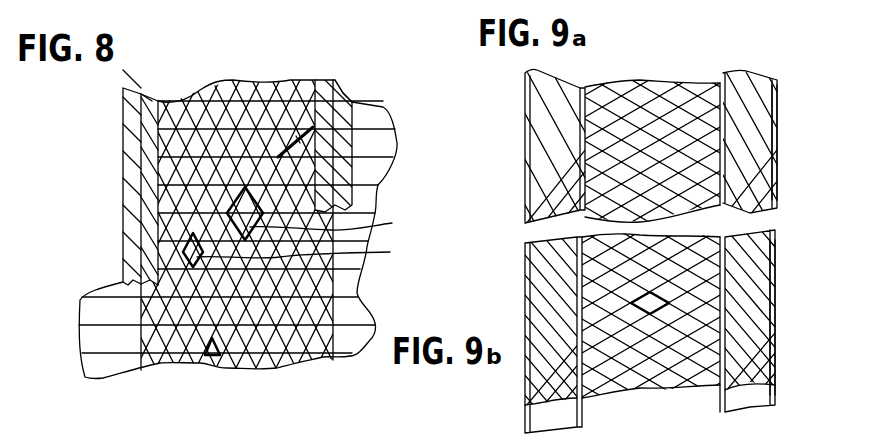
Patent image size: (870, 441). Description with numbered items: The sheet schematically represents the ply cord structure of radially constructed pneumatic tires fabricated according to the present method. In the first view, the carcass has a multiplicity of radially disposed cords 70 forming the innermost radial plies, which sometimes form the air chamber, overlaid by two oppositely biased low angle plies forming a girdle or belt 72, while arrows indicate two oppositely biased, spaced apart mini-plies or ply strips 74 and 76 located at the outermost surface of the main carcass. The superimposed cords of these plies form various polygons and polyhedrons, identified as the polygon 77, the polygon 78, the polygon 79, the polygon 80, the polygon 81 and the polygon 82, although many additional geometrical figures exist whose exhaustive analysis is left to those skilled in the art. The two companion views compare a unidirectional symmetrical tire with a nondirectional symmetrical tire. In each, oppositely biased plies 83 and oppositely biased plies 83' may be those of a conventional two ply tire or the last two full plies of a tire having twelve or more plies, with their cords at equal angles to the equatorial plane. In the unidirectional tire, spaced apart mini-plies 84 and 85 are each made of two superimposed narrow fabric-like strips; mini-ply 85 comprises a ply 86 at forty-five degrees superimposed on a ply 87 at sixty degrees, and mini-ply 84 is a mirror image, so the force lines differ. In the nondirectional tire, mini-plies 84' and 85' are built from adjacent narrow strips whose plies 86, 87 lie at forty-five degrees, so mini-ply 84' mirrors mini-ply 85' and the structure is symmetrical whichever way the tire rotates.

In FIG. 8, the radially disposed cords 70 is at (365, 288).
In FIG. 8, the girdle or belt 72 is at (203, 365).
In FIG. 8, the mini-ply 74 is at (343, 93).
In FIG. 8, the mini-ply 76 is at (121, 180).
In FIG. 8, the polygon 77 is at (332, 95).
In FIG. 8, the polygon 78 is at (307, 252).
In FIG. 8, the polygon 79 is at (123, 113).
In FIG. 8, the polygon 80 is at (397, 143).
In FIG. 8, the polygon 81 is at (335, 225).
In FIG. 8, the polygon 82 is at (212, 360).
In FIG. 9a, the oppositely biased plies 83 is at (652, 151).
In FIG. 9b, the oppositely biased plies 83' is at (651, 302).
In FIG. 9a, the mini-ply 84 is at (631, 146).
In FIG. 9b, the mini-ply 84' is at (615, 334).
In FIG. 9a, the mini-ply 85 is at (757, 142).
In FIG. 9b, the mini-ply 85' is at (721, 320).
In FIG. 9a, the ply 86 is at (773, 99).
In FIG. 9b, the ply 86 is at (755, 283).
In FIG. 9a, the ply 87 is at (773, 122).
In FIG. 9b, the ply 87 is at (773, 257).